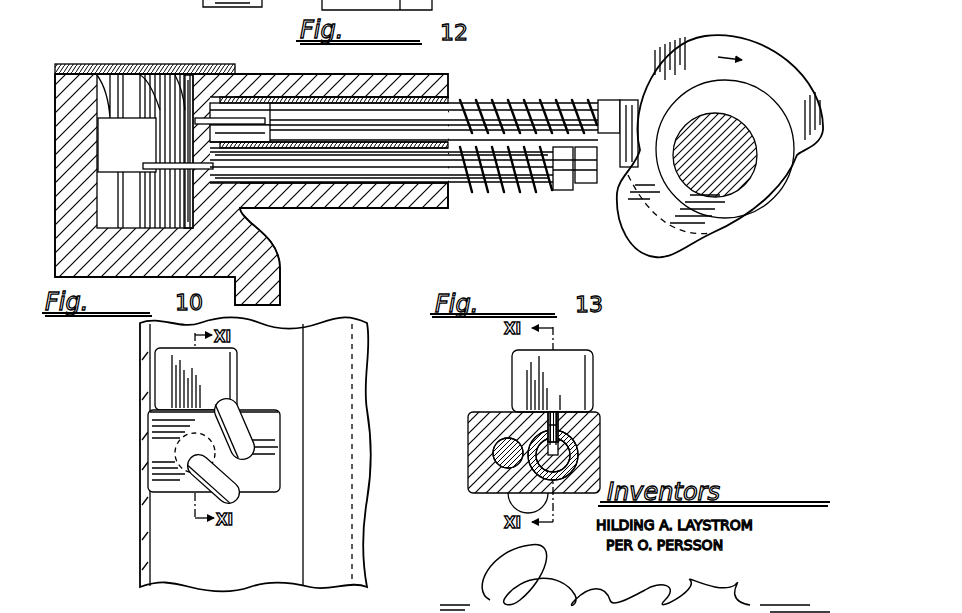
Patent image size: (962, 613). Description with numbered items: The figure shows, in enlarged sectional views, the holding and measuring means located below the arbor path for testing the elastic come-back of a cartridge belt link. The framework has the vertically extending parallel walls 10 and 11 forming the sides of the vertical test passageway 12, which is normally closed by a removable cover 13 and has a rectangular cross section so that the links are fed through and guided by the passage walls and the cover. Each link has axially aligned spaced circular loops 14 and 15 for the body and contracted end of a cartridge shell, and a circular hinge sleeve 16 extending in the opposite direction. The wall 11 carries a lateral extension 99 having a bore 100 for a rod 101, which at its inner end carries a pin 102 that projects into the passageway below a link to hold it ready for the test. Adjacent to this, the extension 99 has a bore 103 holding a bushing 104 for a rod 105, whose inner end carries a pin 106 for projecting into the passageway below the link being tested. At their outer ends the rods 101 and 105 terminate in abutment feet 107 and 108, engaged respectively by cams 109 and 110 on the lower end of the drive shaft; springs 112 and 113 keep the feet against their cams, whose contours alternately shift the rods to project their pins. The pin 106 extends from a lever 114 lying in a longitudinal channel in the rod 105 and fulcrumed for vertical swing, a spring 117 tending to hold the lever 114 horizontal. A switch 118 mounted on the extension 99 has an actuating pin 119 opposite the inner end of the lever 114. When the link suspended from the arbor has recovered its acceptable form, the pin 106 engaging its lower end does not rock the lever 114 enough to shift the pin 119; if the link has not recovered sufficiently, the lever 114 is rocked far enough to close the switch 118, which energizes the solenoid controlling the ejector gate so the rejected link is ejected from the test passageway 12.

In FIG. 12, the wall 10 is at (73, 90).
In FIG. 12, the wall 11 is at (227, 222).
In FIG. 12, the test passageway 12 is at (192, 78).
In FIG. 12, the removable cover 13 is at (153, 66).
In FIG. 12, the circular loop 14 is at (108, 208).
In FIG. 12, the circular loop 15 is at (112, 107).
In FIG. 12, the hinge sleeve 16 is at (103, 147).
In FIG. 12, the lateral extension 99 is at (387, 195).
In FIG. 10, the lateral extension 99 is at (270, 476).
In FIG. 12, the bore 100 is at (400, 190).
In FIG. 12, the rod 101 is at (336, 165).
In FIG. 10, the rod 101 is at (222, 455).
In FIG. 13, the rod 101 is at (497, 460).
In FIG. 12, the pin 102 is at (160, 158).
In FIG. 12, the bore 103 is at (408, 100).
In FIG. 13, the bore 103 is at (510, 493).
In FIG. 12, the bushing 104 is at (398, 97).
In FIG. 13, the bushing 104 is at (578, 462).
In FIG. 12, the rod 105 is at (437, 113).
In FIG. 10, the rod 105 is at (175, 455).
In FIG. 13, the rod 105 is at (580, 430).
In FIG. 12, the pin 106 is at (225, 120).
In FIG. 10, the abutment foot 107 is at (237, 433).
In FIG. 10, the abutment foot 108 is at (227, 495).
In FIG. 12, the cam 109 is at (792, 82).
In FIG. 12, the cam 110 is at (685, 237).
In FIG. 12, the spring 112 is at (518, 193).
In FIG. 12, the spring 113 is at (520, 99).
In FIG. 12, the lever 114 is at (273, 100).
In FIG. 13, the lever 114 is at (573, 427).
In FIG. 13, the spring 117 is at (570, 437).
In FIG. 10, the switch 118 is at (218, 363).
In FIG. 13, the switch 118 is at (557, 413).
In FIG. 13, the actuating pin 119 is at (582, 392).